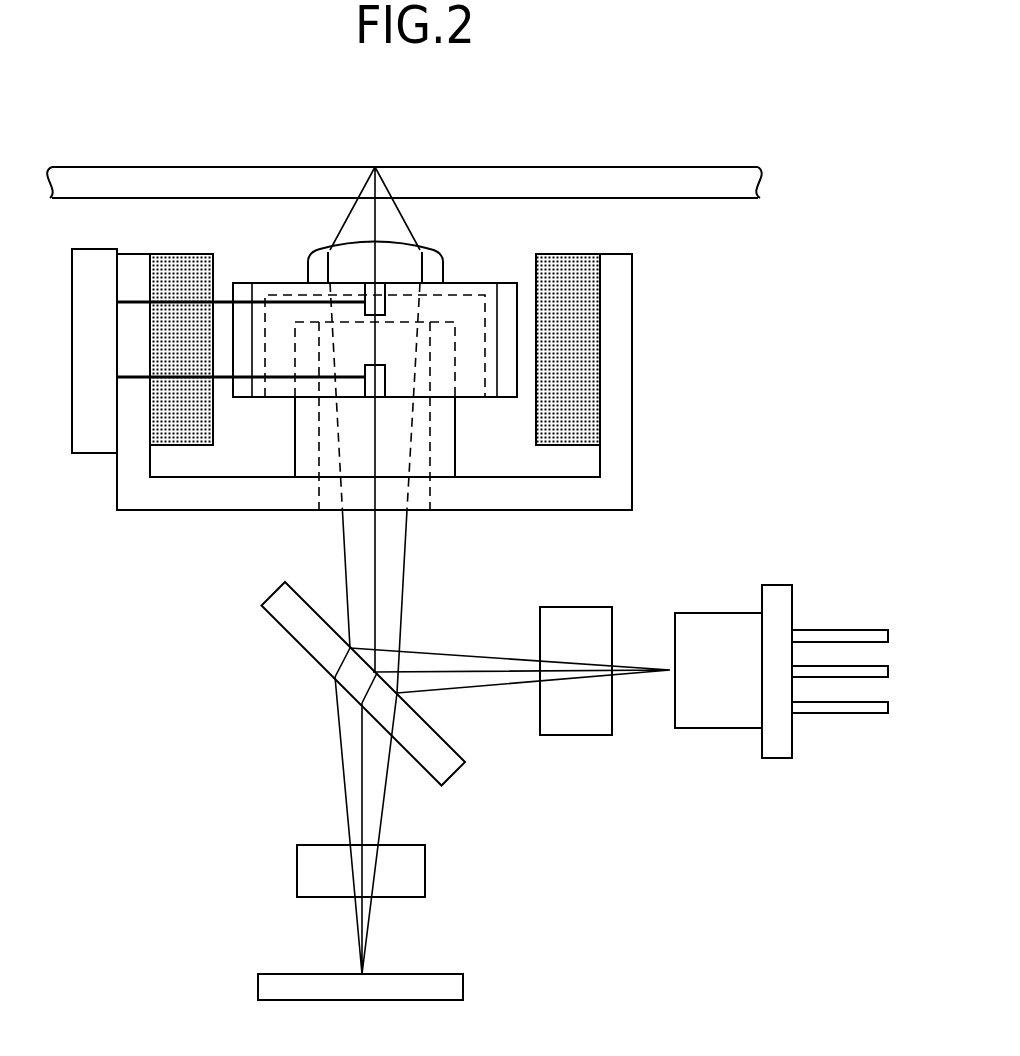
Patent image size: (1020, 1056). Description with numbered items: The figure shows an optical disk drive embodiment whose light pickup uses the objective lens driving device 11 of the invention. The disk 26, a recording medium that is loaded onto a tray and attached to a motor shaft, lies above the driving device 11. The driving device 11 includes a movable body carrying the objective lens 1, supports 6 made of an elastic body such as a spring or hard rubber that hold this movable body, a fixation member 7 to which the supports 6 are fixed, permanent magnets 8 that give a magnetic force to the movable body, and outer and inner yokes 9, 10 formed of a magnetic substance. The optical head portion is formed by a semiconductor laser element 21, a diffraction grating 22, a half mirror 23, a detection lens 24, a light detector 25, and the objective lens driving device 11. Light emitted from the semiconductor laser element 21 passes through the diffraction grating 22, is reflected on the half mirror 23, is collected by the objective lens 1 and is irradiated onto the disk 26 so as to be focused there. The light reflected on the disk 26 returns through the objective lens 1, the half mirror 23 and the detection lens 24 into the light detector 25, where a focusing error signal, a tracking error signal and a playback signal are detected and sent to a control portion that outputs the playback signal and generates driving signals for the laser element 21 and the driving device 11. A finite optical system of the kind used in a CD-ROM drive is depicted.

The objective lens 1 is at (430, 245).
The supports 6 is at (225, 300).
The fixation member 7 is at (88, 343).
The permanent magnets 8 is at (583, 305).
The outer yoke 9 is at (623, 440).
The inner yoke 10 is at (300, 441).
The objective lens driving device 11 is at (668, 367).
The semiconductor laser element 21 is at (712, 727).
The diffraction grating 22 is at (578, 727).
The half mirror 23 is at (293, 625).
The detection lens 24 is at (303, 870).
The light detector 25 is at (263, 982).
The disk 26 is at (620, 173).